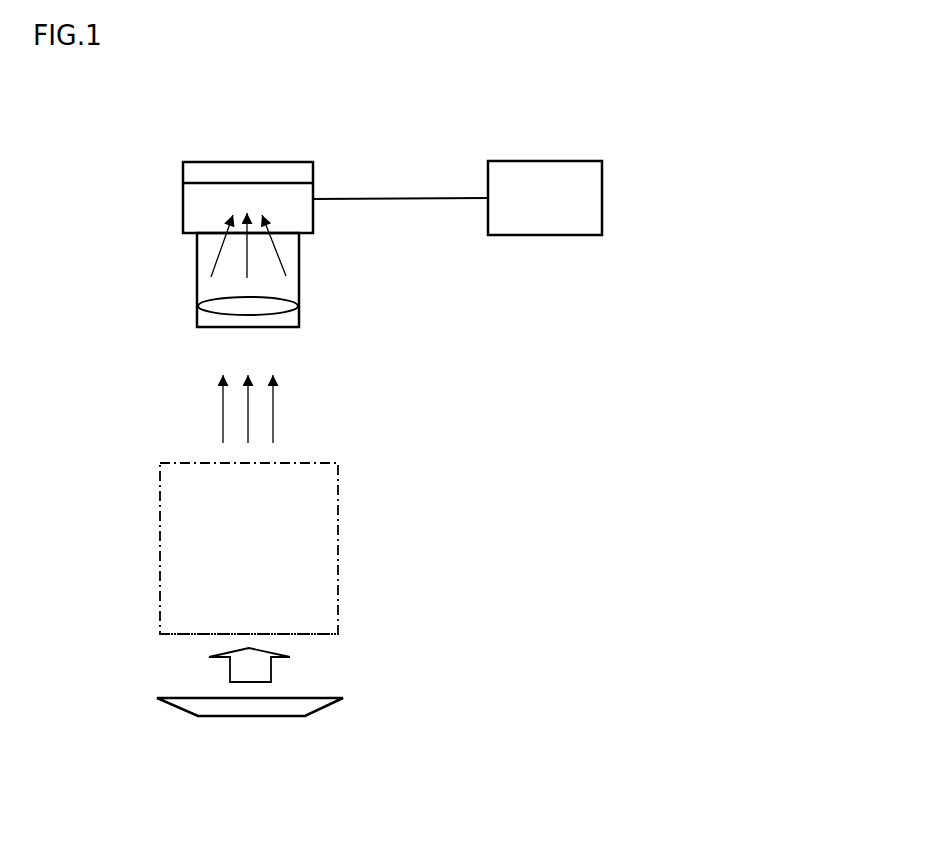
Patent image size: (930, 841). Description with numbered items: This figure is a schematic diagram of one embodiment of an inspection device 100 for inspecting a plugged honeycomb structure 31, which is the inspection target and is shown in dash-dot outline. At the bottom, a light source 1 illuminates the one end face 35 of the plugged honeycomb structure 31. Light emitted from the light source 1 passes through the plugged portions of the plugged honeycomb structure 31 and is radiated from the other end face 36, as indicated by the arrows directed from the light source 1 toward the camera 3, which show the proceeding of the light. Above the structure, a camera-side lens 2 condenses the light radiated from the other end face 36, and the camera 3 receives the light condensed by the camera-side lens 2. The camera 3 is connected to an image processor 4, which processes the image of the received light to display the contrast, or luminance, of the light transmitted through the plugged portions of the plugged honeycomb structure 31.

The inspection device 100 is at (805, 139).
The light source 1 is at (322, 707).
The camera-side lens 2 is at (283, 311).
The camera 3 is at (183, 199).
The image processor 4 is at (539, 235).
The plugged honeycomb structure 31 is at (338, 552).
The one end face 35 is at (317, 634).
The other end face 36 is at (297, 463).